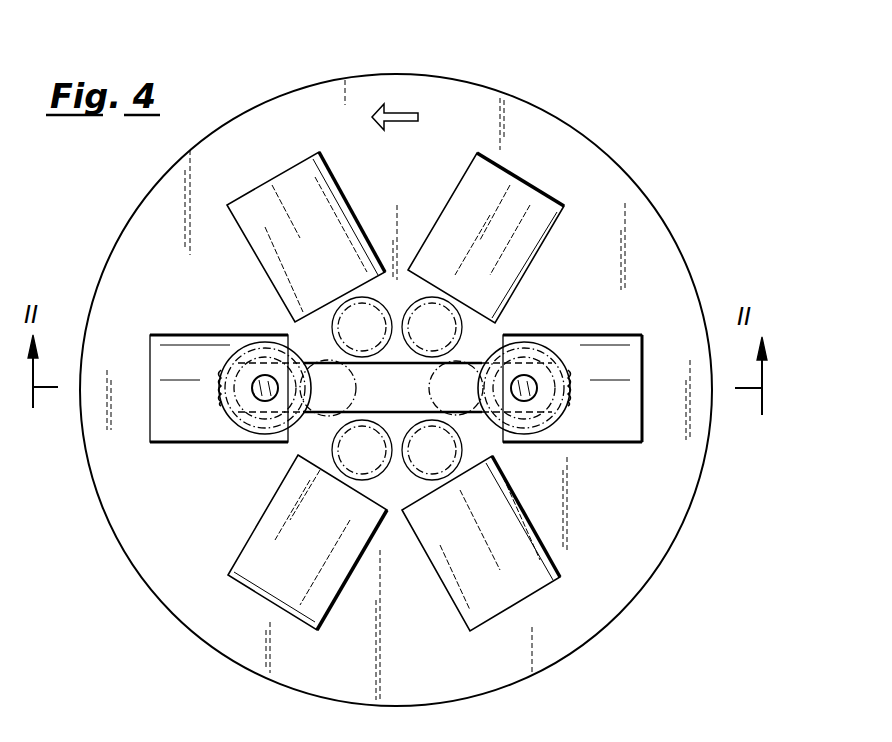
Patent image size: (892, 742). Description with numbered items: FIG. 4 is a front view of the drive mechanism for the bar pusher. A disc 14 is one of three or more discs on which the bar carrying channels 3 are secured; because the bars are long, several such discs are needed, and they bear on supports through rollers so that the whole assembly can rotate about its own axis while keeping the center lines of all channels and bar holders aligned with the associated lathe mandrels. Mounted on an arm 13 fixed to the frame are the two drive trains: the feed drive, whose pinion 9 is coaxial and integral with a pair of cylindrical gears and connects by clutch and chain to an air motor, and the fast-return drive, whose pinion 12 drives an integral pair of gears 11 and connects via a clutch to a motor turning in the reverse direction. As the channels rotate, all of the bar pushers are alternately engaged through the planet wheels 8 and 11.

The bar carrying channel 3 is at (305, 172).
The planet wheel 8 is at (530, 360).
The pinion 9 is at (573, 401).
The integral pair of gears 11 is at (260, 358).
The pinion 12 is at (225, 412).
The arm 13 is at (377, 402).
The disc 14 is at (540, 126).